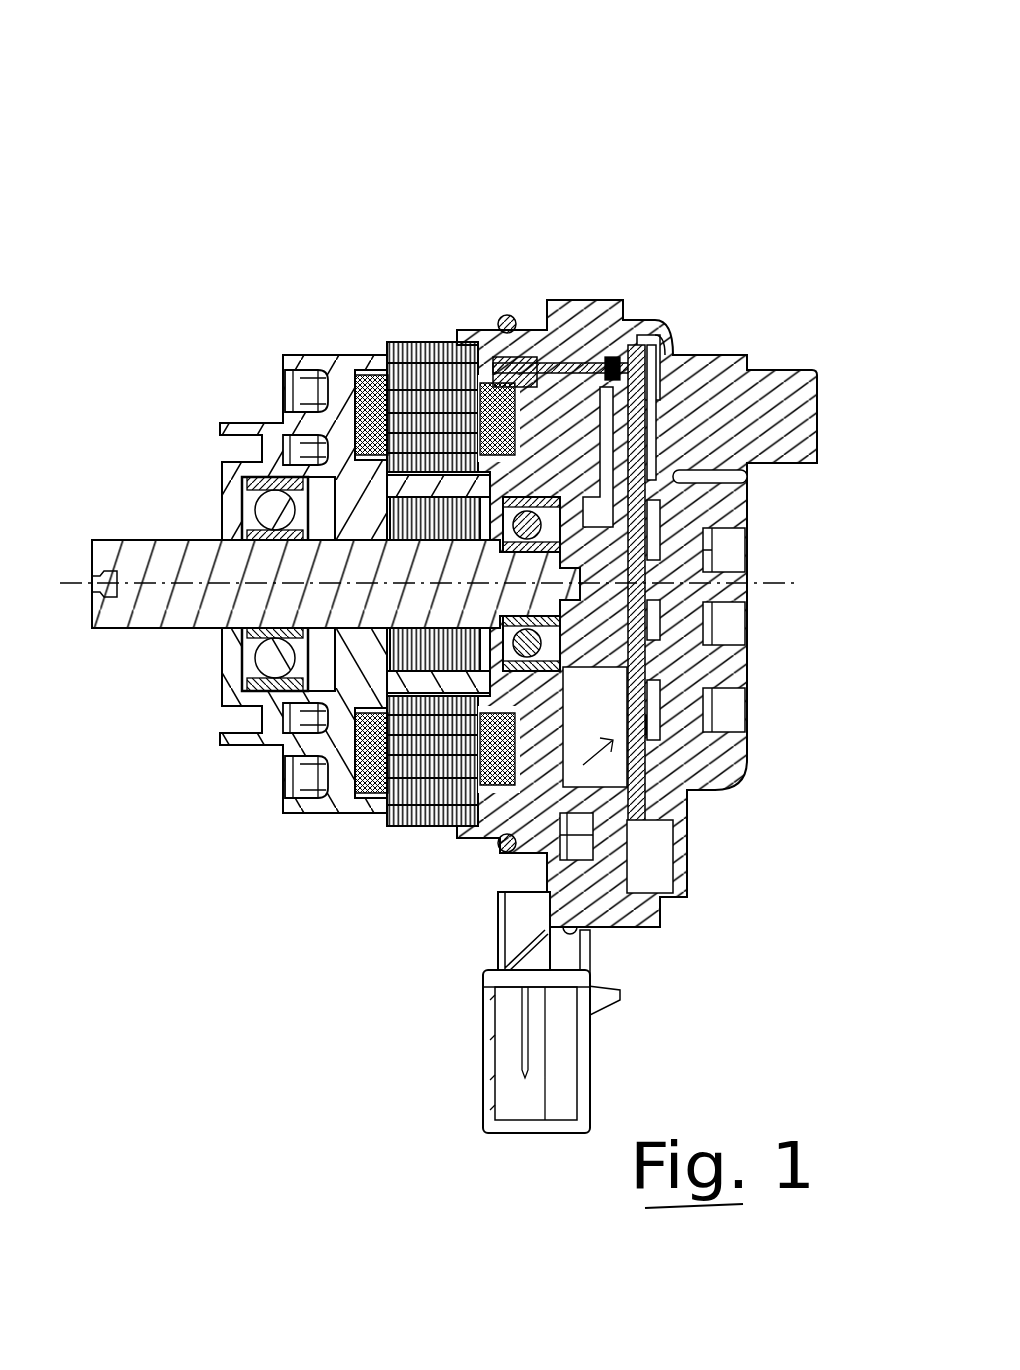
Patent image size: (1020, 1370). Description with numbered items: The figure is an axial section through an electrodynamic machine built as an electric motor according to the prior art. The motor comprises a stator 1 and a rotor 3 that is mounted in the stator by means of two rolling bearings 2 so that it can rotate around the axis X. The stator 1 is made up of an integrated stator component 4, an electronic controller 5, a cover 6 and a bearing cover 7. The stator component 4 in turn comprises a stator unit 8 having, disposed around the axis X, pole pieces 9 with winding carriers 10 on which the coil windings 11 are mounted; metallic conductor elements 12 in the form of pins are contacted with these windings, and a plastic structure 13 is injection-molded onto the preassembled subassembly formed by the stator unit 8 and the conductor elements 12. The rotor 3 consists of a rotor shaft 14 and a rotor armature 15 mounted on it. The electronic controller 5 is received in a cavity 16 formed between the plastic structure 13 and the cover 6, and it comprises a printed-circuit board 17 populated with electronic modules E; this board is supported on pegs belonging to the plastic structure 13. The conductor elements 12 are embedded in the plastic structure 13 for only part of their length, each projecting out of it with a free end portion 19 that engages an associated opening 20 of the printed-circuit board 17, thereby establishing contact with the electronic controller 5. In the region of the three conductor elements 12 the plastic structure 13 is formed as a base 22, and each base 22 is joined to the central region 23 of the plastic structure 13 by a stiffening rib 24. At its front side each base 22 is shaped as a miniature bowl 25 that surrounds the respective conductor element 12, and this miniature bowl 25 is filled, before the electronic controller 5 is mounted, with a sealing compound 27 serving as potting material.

The stator 1 is at (473, 619).
The rolling bearings 2 is at (476, 542).
The rotor 3 is at (277, 420).
The stator component 4 is at (461, 262).
The electronic controller 5 is at (540, 832).
The cover 6 is at (680, 510).
The bearing cover 7 is at (230, 677).
The stator unit 8 is at (395, 303).
The pole pieces 9 is at (408, 340).
The winding carriers 10 is at (362, 378).
The coil windings 11 is at (353, 500).
The conductor elements 12 is at (560, 363).
The plastic structure 13 is at (545, 330).
The rotor shaft 14 is at (197, 553).
The rotor armature 15 is at (290, 748).
The cavity 16 is at (680, 785).
The printed-circuit board 17 is at (645, 340).
The free end portion 19 is at (695, 345).
The opening 20 is at (745, 345).
The base 22 is at (470, 835).
The central region 23 is at (693, 547).
The stiffening rib 24 is at (740, 340).
The miniature bowl 25 is at (700, 755).
The sealing compound 27 is at (582, 357).
The axis X is at (70, 583).
The electronic modules E is at (582, 685).